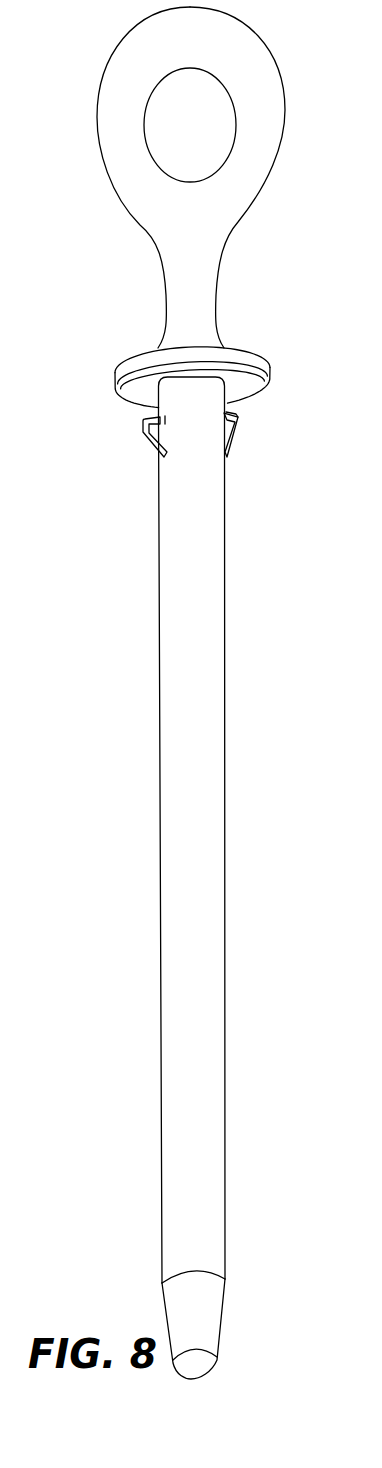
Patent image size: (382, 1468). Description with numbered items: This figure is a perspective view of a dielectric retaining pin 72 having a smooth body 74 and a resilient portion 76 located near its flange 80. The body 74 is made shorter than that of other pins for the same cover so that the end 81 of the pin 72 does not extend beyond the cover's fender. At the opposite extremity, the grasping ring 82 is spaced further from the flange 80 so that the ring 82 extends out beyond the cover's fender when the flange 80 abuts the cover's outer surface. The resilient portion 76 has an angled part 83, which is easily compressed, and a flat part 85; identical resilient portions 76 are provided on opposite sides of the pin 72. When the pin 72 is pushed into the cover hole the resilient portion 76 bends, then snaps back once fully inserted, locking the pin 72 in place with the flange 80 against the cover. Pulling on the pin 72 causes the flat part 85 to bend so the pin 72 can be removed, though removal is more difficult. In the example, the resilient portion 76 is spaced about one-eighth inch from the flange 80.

The dielectric retaining pin 72 is at (106, 537).
The smooth body 74 is at (160, 751).
The resilient portion 76 is at (143, 438).
The flange 80 is at (115, 378).
The end 81 is at (164, 1306).
The grasping ring 82 is at (97, 127).
The angled part 83 is at (234, 441).
The flat part 85 is at (240, 410).